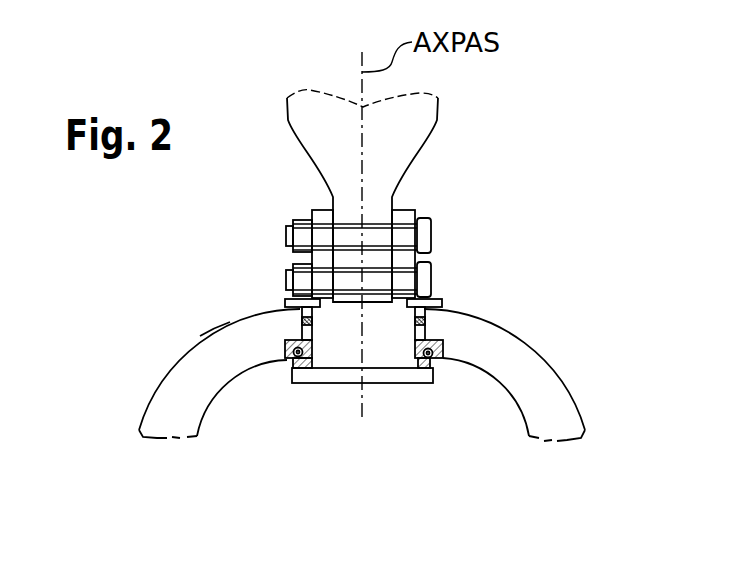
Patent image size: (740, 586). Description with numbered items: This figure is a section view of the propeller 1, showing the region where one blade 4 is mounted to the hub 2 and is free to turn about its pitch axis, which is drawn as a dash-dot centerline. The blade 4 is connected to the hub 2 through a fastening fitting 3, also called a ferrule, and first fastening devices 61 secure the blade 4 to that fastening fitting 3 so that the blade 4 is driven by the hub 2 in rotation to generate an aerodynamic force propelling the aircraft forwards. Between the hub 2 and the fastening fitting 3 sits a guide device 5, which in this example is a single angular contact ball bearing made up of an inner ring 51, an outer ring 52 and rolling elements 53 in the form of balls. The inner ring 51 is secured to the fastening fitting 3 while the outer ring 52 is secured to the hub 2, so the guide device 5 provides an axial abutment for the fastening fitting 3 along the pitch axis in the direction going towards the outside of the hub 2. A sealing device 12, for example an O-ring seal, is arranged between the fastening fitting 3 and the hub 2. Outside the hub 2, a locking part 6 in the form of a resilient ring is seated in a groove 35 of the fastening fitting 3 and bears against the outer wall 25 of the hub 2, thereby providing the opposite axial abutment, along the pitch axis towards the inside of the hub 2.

The propeller 1 is at (155, 309).
The hub 2 is at (204, 344).
The fastening fitting 3 is at (430, 374).
The blade 4 is at (313, 137).
The guide device 5 is at (480, 401).
The locking part 6 is at (397, 244).
The sealing device 12 is at (423, 323).
The outer wall 25 is at (256, 315).
The groove 35 is at (320, 307).
The inner ring 51 is at (415, 362).
The outer ring 52 is at (433, 353).
The rolling elements 53 is at (443, 355).
The first fastening devices 61 is at (423, 237).